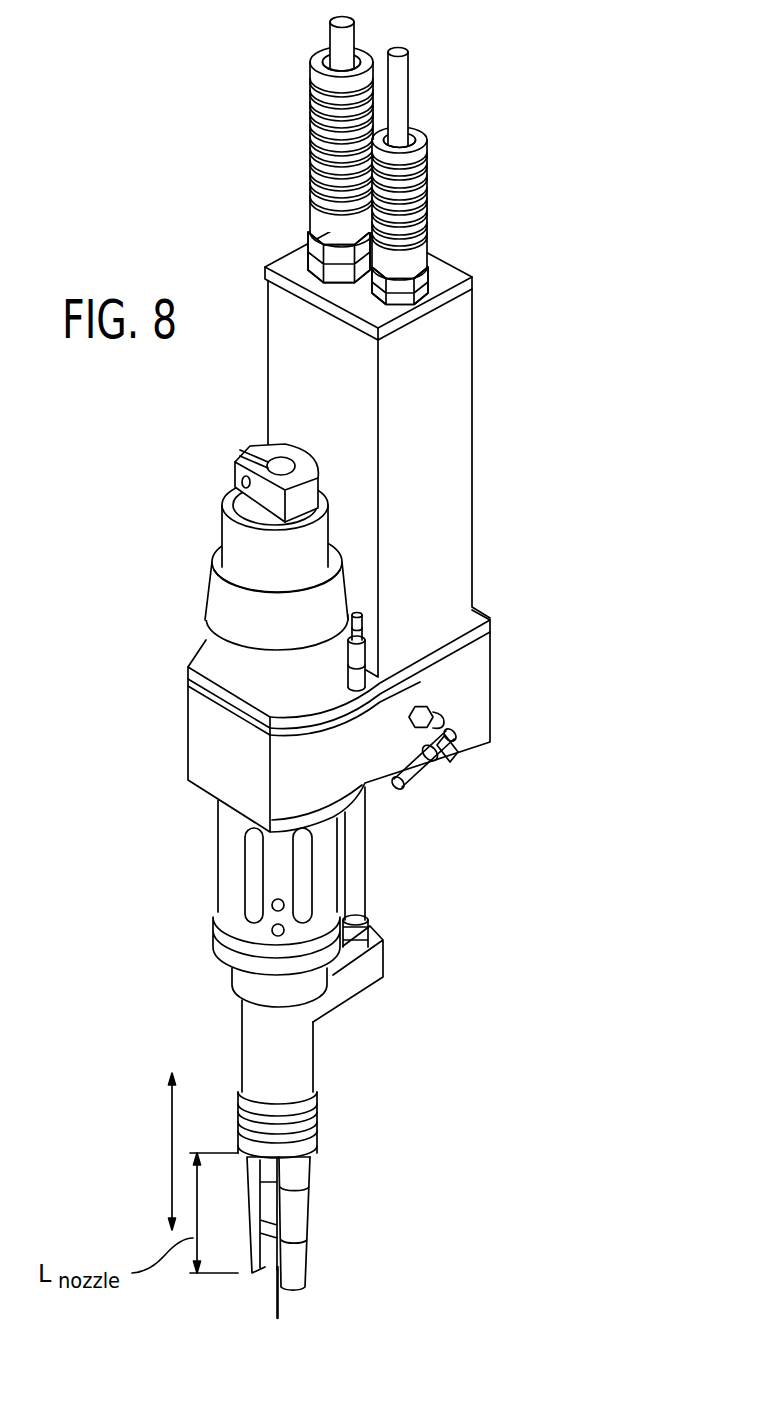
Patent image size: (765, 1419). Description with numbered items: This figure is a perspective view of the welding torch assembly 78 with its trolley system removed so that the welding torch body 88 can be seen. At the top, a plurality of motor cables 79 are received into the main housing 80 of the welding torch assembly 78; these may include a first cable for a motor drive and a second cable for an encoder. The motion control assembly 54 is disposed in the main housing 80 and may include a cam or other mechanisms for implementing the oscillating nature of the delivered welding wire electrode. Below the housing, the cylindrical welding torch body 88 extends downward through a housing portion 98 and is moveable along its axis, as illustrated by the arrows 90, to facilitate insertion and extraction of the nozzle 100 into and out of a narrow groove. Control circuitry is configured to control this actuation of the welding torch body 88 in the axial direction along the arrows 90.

The welding torch assembly 78 is at (155, 148).
The motor cables 79 is at (480, 112).
The main housing 80 is at (444, 432).
The motion control assembly 54 is at (520, 733).
The housing 98 is at (220, 853).
The welding torch body 88 is at (252, 1053).
The arrows 90 is at (168, 1162).
The nozzle 100 is at (327, 1180).